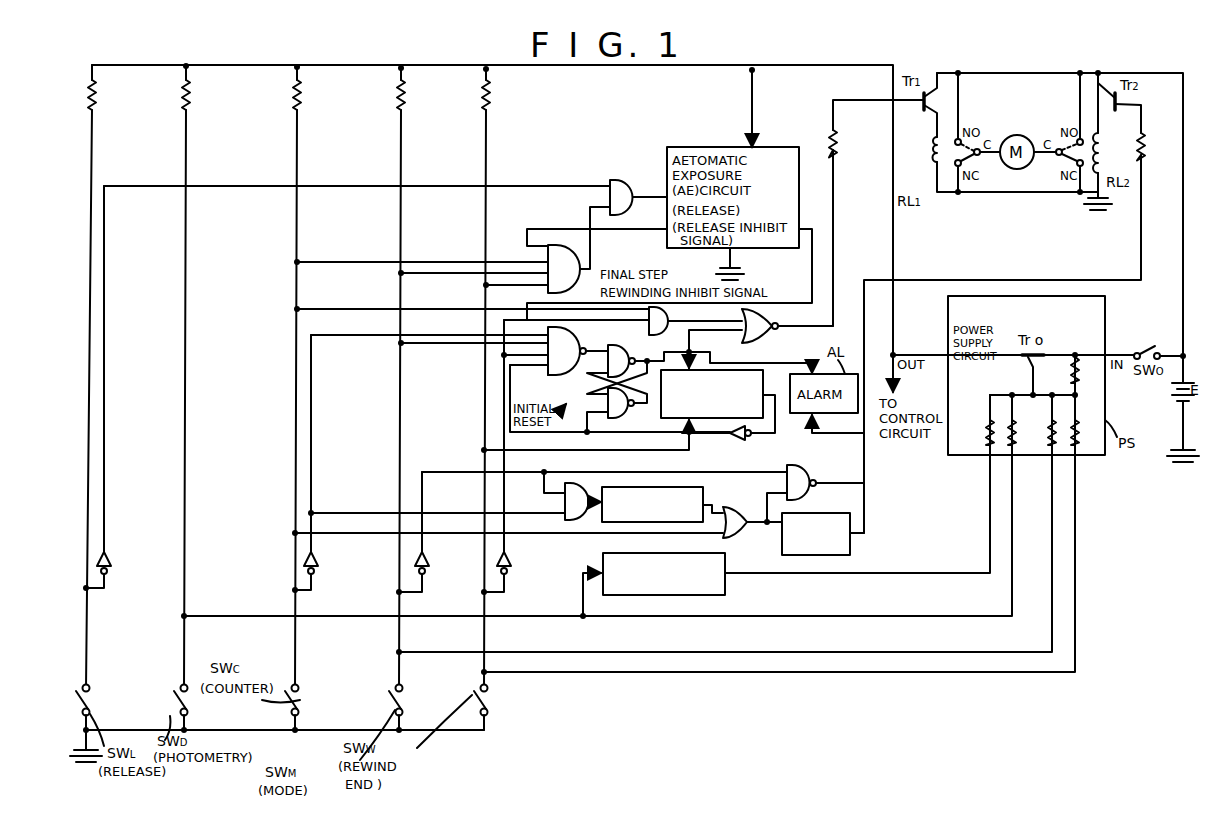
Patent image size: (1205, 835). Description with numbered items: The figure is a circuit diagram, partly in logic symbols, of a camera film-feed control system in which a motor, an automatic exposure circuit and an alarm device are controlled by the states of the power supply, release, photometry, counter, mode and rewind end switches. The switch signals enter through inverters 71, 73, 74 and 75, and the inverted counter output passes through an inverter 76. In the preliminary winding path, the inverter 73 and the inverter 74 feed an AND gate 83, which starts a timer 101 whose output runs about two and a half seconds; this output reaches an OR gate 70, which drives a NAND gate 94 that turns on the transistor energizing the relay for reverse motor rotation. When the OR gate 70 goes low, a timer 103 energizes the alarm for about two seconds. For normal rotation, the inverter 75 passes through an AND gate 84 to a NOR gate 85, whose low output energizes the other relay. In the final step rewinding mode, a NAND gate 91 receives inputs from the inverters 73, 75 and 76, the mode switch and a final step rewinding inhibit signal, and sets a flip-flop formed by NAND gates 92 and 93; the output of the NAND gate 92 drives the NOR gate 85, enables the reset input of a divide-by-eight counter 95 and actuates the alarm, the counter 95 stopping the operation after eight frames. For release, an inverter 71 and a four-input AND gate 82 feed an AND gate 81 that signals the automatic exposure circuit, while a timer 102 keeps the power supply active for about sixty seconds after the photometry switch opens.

The OR gate 70 is at (738, 535).
The inverter 71 is at (112, 560).
The inverter 73 is at (319, 560).
The inverter 74 is at (430, 560).
The inverter 75 is at (512, 560).
The inverter 76 is at (735, 440).
The AND gate 81 is at (621, 185).
The AND gate 82 is at (568, 252).
The AND gate 83 is at (578, 486).
The AND gate 84 is at (662, 335).
The NOR gate 85 is at (768, 338).
The NAND gate 91 is at (570, 373).
The NAND gate 92 is at (628, 337).
The NAND gate 93 is at (620, 416).
The NAND gate 94 is at (804, 468).
The divide-by-8 counter 95 is at (766, 408).
The timer 101 is at (685, 487).
The timer 102 is at (725, 583).
The timer 103 is at (850, 547).